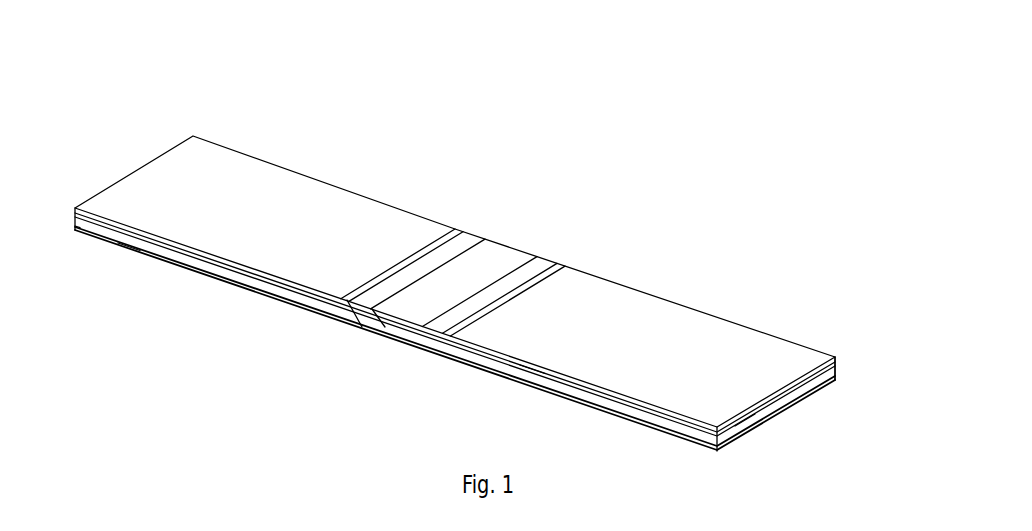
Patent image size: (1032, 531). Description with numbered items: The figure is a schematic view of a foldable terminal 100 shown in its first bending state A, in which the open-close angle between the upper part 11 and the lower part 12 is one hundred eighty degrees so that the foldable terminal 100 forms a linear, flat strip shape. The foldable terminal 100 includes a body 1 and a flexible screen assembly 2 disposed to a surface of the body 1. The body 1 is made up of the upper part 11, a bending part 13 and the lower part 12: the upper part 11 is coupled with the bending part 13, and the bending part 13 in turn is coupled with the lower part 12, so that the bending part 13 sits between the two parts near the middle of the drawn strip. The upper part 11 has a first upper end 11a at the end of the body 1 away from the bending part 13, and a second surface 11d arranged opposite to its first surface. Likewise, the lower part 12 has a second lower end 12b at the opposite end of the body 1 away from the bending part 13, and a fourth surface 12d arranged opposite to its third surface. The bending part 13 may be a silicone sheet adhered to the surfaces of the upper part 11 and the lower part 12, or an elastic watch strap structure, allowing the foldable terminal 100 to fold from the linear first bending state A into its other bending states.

The foldable terminal 100 is at (467, 257).
The body 1 is at (837, 371).
The flexible screen assembly 2 is at (748, 340).
The upper part 11 is at (208, 272).
The first upper end 11a is at (75, 227).
The second surface 11d is at (128, 250).
The lower part 12 is at (595, 400).
The fourth surface 12d is at (528, 387).
The second lower end 12b is at (743, 422).
The bending part 13 is at (387, 325).
The first bending state A is at (615, 235).